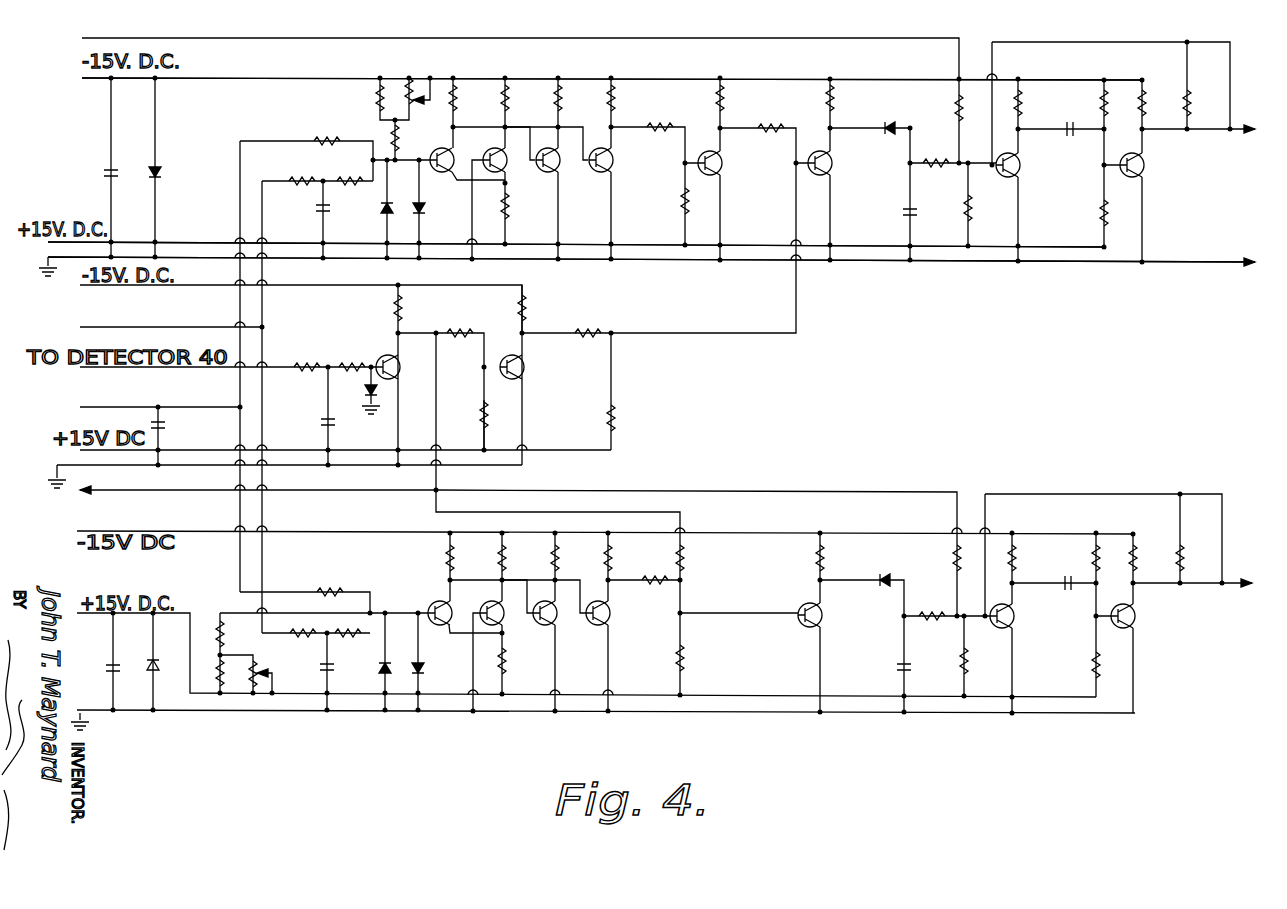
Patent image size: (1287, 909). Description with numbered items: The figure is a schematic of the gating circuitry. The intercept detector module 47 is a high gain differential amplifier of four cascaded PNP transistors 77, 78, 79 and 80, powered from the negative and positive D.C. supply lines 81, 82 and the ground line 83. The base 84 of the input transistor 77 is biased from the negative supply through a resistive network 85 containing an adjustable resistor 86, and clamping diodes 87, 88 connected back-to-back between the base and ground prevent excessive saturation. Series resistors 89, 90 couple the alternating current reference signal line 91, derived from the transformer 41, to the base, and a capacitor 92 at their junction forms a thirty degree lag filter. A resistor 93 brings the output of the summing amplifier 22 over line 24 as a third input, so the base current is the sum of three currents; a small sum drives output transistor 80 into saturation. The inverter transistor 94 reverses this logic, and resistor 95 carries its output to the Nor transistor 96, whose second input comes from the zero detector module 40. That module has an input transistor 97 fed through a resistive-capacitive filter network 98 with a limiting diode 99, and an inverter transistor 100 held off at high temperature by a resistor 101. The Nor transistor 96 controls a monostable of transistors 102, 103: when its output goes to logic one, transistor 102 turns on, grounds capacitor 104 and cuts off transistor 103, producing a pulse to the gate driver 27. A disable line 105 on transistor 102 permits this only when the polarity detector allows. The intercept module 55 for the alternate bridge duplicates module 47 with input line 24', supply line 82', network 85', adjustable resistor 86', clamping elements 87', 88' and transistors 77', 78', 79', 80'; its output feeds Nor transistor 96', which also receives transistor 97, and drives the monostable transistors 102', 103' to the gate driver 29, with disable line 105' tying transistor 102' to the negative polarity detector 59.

The intercept detector module 47 is at (262, 126).
The disable line 105 is at (520, 46).
The negative D.C. power supply line 81 is at (324, 78).
The positive D.C. power supply line 82 is at (576, 231).
The ground or reference line 83 is at (566, 260).
The line 24 is at (214, 366).
The alternating current reference signal line 91 is at (265, 216).
The resistor 93 is at (330, 130).
The resistor 89 is at (290, 175).
The resistor 90 is at (360, 175).
The capacitor 92 is at (325, 210).
The clamping diode 87 is at (370, 209).
The clamping diode 88 is at (436, 209).
The resistive network 85 is at (394, 99).
The adjustable resistor 86 is at (428, 102).
The base of transistor 77 84 is at (437, 154).
The input transistor 77 is at (454, 142).
The transistor 78 is at (530, 168).
The transistor 79 is at (539, 168).
The output transistor 80 is at (633, 168).
The inverter transistor 94 is at (722, 172).
The resistor 95 is at (780, 126).
The Nor transistor 96 is at (896, 169).
The transistor 102 is at (1111, 152).
The capacitor 104 is at (1074, 124).
The transistor 103 is at (1177, 171).
The gate driver 27 is at (1220, 262).
The zero detector module 40 is at (326, 330).
The transformer 41 is at (131, 316).
The summing amplifier 22 is at (138, 425).
The input transistor 97 is at (376, 360).
The resistive-capacitive filter network 98 is at (355, 411).
The limiting diode 99 is at (380, 392).
The transistor 100 is at (511, 380).
The resistor 101 is at (484, 422).
The negative polarity detector 59 is at (257, 500).
The intercept module 55 is at (393, 567).
The disable line 105' is at (698, 538).
The line 24' is at (308, 596).
The resistive network 85' is at (236, 653).
The adjustable resistor 86' is at (279, 670).
The clamping diode 87' is at (327, 671).
The positive D.C. power supply line 82' is at (385, 661).
The clamping diode 88' is at (418, 661).
The input transistor 77' is at (480, 597).
The transistor 78' is at (522, 622).
The transistor 79' is at (538, 622).
The output transistor 80' is at (692, 622).
The Nor circuit transistor 96' is at (876, 622).
The transistor 102' is at (1103, 603).
The transistor 103' is at (1172, 623).
The gate driver 29 is at (1232, 588).